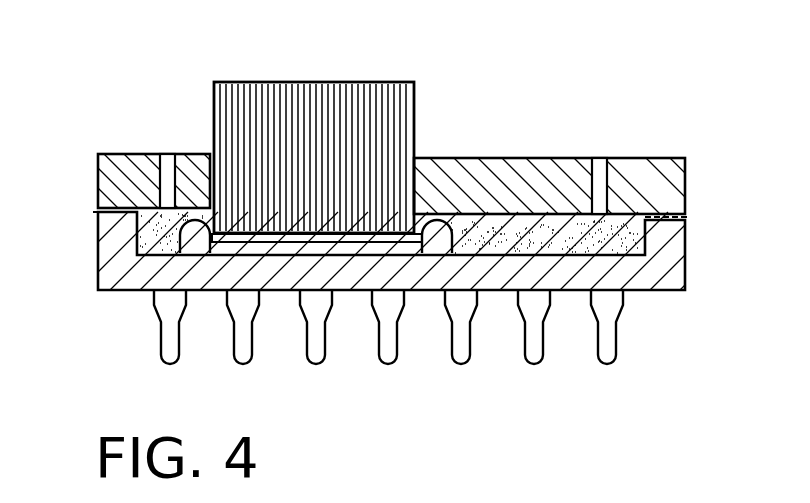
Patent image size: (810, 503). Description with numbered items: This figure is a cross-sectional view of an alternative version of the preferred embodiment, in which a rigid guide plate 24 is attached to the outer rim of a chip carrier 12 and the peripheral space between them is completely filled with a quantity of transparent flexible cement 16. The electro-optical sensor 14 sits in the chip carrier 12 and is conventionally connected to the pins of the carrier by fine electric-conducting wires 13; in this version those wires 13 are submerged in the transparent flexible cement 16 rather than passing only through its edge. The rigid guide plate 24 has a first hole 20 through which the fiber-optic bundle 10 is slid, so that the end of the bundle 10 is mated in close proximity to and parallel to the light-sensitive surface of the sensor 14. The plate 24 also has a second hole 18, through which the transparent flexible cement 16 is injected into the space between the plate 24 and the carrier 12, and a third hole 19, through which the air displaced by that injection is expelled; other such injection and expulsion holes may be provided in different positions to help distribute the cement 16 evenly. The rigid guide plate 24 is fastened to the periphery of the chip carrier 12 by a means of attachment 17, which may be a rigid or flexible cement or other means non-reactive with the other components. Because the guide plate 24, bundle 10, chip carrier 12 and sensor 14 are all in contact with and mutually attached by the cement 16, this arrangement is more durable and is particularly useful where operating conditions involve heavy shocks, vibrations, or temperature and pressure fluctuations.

The fiber-optic bundle 10 is at (416, 103).
The chip carrier 12 is at (677, 272).
The fine electric-conducting wires 13 is at (448, 242).
The electro-optical sensor 14 is at (292, 243).
The transparent flexible cement 16 is at (568, 240).
The means of attachment 17 is at (98, 213).
The second hole 18 is at (597, 170).
The third hole 19 is at (168, 162).
The first hole 20 is at (416, 158).
The rigid guide plate 24 is at (675, 159).